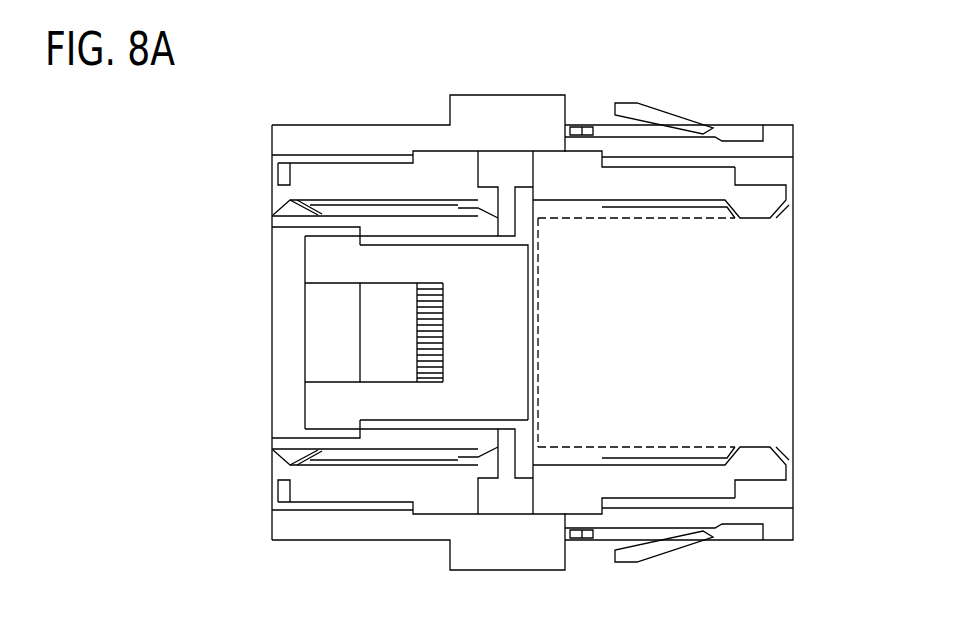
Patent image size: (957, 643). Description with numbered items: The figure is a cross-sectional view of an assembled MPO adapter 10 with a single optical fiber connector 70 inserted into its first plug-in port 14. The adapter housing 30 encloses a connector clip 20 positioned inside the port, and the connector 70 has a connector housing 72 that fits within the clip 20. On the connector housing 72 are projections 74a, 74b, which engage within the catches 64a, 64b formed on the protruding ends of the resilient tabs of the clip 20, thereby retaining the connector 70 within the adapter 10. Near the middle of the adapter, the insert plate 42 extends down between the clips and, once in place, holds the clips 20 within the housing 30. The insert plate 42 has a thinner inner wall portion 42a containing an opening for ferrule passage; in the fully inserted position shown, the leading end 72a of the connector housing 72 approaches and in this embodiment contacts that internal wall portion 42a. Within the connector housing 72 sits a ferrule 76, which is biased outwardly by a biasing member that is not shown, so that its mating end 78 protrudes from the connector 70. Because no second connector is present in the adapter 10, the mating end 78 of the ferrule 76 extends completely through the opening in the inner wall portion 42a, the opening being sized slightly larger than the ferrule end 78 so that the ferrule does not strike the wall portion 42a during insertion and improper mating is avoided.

The MPO adapter 10 is at (232, 110).
The first plug-in port 14 is at (272, 492).
The connector clip 20 is at (455, 165).
The housing 30 is at (355, 138).
The insert plate 42 is at (505, 165).
The inner wall portion 42a is at (533, 190).
The catch 64a is at (272, 207).
The catch 64b is at (283, 474).
The optical fiber connector 70 is at (272, 446).
The connector housing 72 is at (395, 440).
The leading end 72a is at (492, 445).
The projection 74a is at (282, 202).
The projection 74b is at (300, 457).
The ferrule 76 is at (413, 265).
The mating end 78 is at (518, 340).